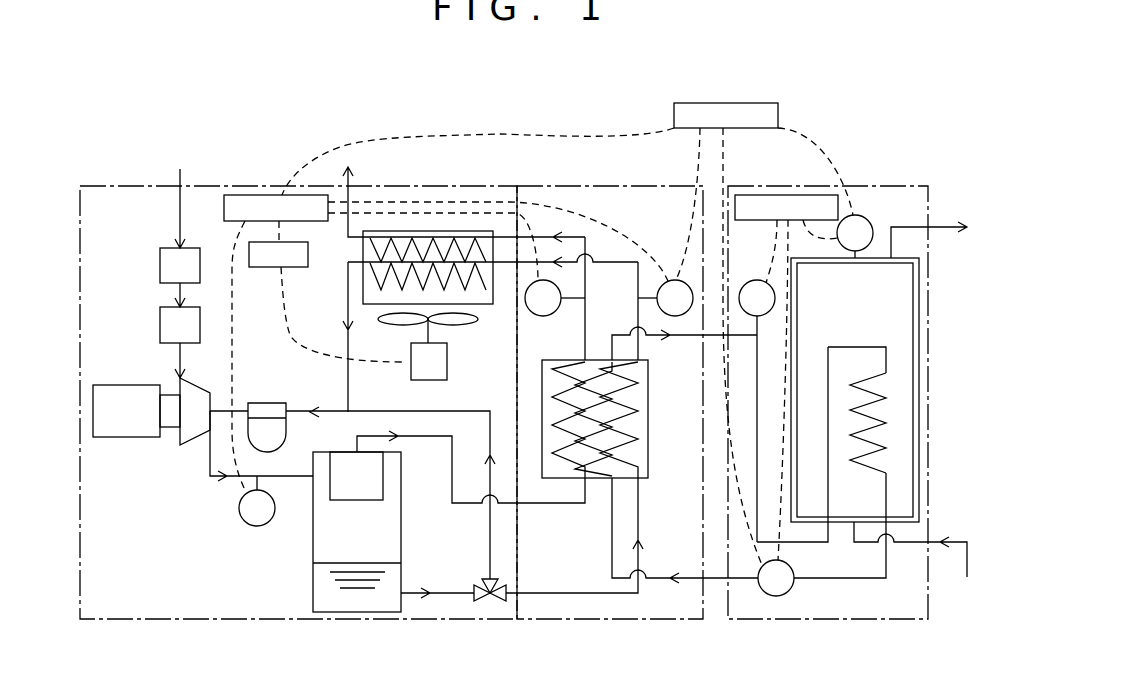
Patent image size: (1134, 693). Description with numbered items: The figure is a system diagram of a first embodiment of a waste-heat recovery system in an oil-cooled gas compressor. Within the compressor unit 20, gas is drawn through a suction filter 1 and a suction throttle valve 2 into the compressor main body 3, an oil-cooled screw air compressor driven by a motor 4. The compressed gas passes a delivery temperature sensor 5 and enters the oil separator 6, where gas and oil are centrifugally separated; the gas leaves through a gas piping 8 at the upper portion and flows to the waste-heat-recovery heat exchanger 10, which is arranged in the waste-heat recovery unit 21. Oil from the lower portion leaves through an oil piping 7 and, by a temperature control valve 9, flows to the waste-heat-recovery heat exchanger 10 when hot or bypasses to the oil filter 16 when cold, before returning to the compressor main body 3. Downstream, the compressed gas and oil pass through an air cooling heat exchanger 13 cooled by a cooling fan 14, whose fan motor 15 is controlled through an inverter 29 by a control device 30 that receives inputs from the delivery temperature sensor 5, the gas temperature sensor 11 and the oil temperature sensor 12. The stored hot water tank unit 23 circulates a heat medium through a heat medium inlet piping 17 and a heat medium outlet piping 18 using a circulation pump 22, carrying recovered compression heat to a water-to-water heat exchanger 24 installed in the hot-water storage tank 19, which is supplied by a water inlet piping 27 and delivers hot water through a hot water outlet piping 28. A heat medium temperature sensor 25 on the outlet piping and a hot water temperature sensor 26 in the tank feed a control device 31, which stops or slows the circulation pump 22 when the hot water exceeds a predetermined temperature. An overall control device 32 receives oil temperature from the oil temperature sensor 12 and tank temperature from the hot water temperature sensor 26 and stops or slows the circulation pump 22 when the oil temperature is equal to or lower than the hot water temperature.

The suction filter 1 is at (160, 265).
The suction throttle valve 2 is at (160, 323).
The compressor main body 3 is at (180, 384).
The motor 4 is at (124, 437).
The delivery temperature sensor 5 is at (244, 522).
The oil separator 6 is at (357, 612).
The oil piping 7 is at (415, 593).
The gas piping 8 is at (423, 436).
The temperature control valve 9 is at (490, 601).
The waste-heat-recovery heat exchanger 10 is at (648, 425).
The gas temperature sensor 11 is at (552, 314).
The oil temperature sensor 12 is at (670, 280).
The air cooling heat exchanger 13 is at (445, 231).
The cooling fan 14 is at (460, 323).
The fan motor 15 is at (447, 362).
The oil filter 16 is at (267, 403).
The heat medium inlet piping 17 is at (865, 578).
The heat medium outlet piping 18 is at (805, 542).
The hot-water storage tank 19 is at (919, 400).
The compressor unit 20 is at (130, 186).
The waste-heat recovery unit 21 is at (568, 187).
The circulation pump 22 is at (776, 596).
The stored hot water tank unit 23 is at (905, 187).
The water-to-water heat exchanger 24 is at (880, 440).
The heat medium temperature sensor 25 is at (757, 280).
The hot water temperature sensor 26 is at (872, 228).
The water inlet piping 27 is at (910, 567).
The hot water outlet piping 28 is at (950, 227).
The inverter 29 is at (298, 268).
The control device 30 is at (262, 195).
The control device 31 is at (787, 195).
The control device 32 is at (674, 115).